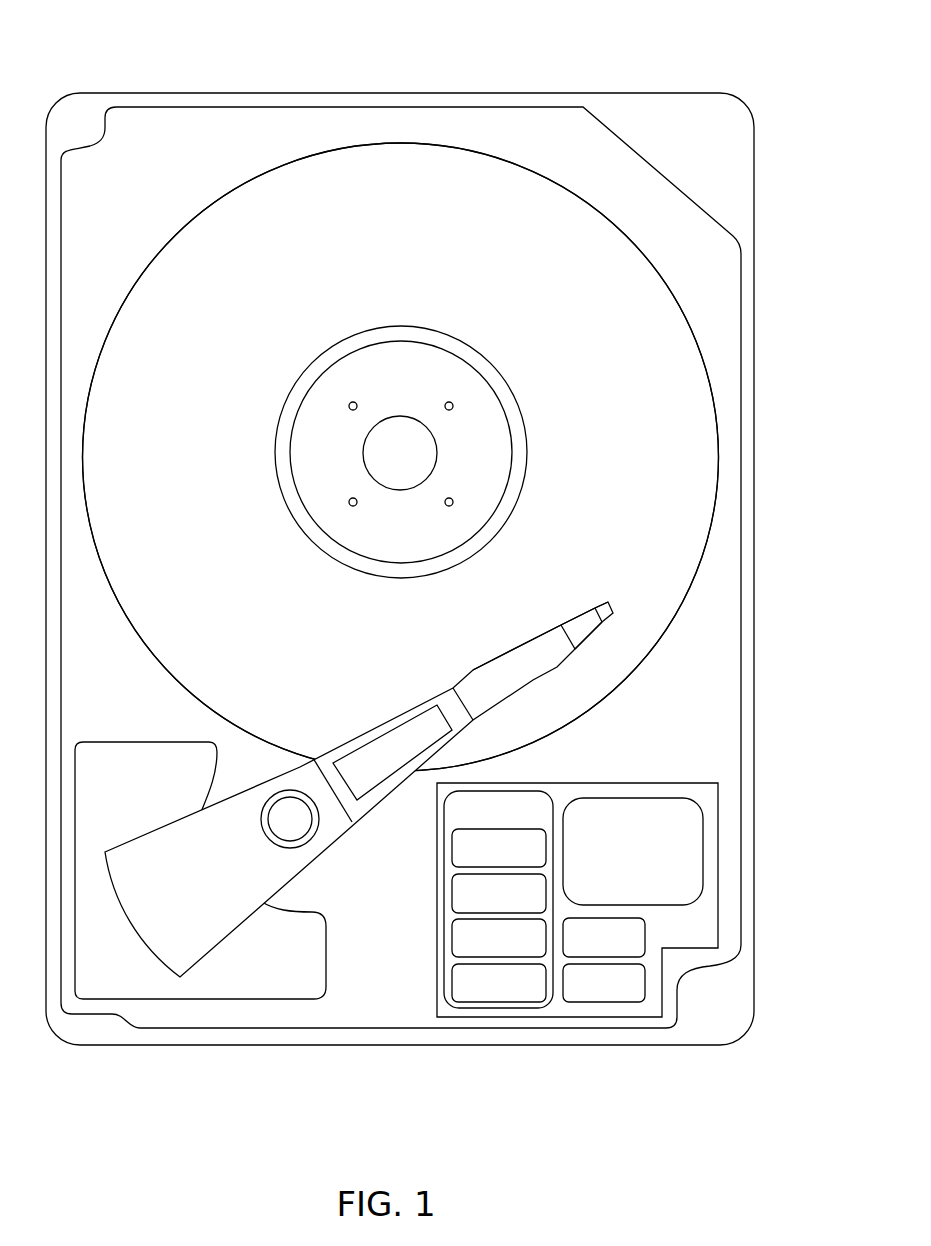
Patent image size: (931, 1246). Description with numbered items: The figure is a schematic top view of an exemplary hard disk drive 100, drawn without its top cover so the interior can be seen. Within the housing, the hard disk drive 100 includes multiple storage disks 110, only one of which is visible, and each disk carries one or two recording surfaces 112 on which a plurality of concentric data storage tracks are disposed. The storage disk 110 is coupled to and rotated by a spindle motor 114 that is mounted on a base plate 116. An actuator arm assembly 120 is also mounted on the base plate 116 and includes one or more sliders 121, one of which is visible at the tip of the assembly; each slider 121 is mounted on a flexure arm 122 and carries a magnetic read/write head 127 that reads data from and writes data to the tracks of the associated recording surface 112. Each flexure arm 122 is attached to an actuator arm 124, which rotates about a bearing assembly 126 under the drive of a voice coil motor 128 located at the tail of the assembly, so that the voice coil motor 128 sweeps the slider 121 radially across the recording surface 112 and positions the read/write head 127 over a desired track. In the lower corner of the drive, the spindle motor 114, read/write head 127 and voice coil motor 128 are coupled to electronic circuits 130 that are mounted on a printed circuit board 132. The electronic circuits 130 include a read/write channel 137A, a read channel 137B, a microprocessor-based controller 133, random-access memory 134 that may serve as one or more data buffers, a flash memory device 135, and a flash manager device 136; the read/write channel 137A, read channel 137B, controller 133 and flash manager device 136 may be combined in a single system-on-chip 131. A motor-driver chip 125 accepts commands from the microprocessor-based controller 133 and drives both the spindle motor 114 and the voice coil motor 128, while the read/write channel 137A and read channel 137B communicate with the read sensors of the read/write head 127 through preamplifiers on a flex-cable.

The hard disk drive 100 is at (134, 45).
The storage disk 110 is at (177, 232).
The recording surface 112 is at (401, 457).
The spindle motor 114 is at (497, 393).
The base plate 116 is at (742, 595).
The actuator arm assembly 120 is at (397, 706).
The slider 121 is at (613, 606).
The flexure arm 122 is at (570, 620).
The actuator arm 124 is at (472, 668).
The motor-driver chip 125 is at (604, 937).
The bearing assembly 126 is at (316, 866).
The read/write head 127 is at (606, 575).
The voice coil motor 128 is at (327, 938).
The electronic circuits 130 is at (583, 859).
The system-on-chip 131 is at (498, 899).
The printed circuit board 132 is at (660, 783).
The microprocessor-based controller 133 is at (499, 848).
The random-access memory 134 is at (604, 983).
The flash memory device 135 is at (633, 851).
The flash manager device 136 is at (499, 893).
The read/write channel 137A is at (499, 938).
The read channel 137B is at (499, 983).